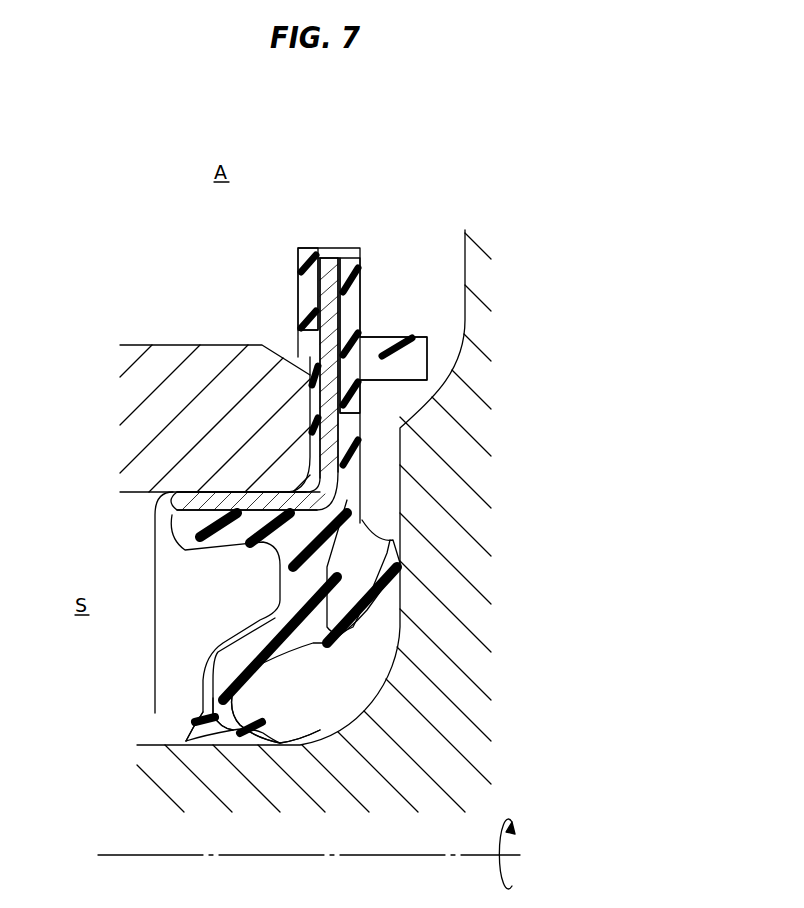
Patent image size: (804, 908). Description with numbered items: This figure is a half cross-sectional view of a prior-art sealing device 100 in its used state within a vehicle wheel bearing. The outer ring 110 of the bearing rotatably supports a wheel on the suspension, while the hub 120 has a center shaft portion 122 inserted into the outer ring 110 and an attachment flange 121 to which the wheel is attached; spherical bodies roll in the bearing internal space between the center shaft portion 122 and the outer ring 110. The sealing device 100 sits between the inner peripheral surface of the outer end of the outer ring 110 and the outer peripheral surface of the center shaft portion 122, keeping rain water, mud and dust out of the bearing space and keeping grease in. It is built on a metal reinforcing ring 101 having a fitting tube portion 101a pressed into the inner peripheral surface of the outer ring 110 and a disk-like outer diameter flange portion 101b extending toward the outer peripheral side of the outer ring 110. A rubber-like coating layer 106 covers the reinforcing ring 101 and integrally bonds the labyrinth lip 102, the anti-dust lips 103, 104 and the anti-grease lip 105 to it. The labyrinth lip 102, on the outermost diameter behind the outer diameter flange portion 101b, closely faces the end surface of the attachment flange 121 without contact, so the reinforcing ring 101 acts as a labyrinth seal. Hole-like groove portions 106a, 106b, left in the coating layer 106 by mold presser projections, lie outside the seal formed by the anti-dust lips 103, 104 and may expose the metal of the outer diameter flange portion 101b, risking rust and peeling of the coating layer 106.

The sealing device 100 is at (366, 465).
The reinforcing ring 101 is at (272, 597).
The fitting tube portion 101a is at (250, 492).
The outer diameter flange portion 101b is at (299, 331).
The labyrinth lip 102 is at (417, 336).
The anti-dust lip 103 is at (396, 559).
The anti-dust lip 104 is at (282, 720).
The anti-grease lip 105 is at (188, 742).
The coating layer 106 is at (355, 297).
The hole-like groove portion 106a is at (348, 418).
The hole-like groove portion 106b is at (316, 289).
The outer ring 110 is at (162, 354).
The hub 120 is at (465, 689).
The attachment flange 121 is at (480, 328).
The center shaft portion 122 is at (146, 789).